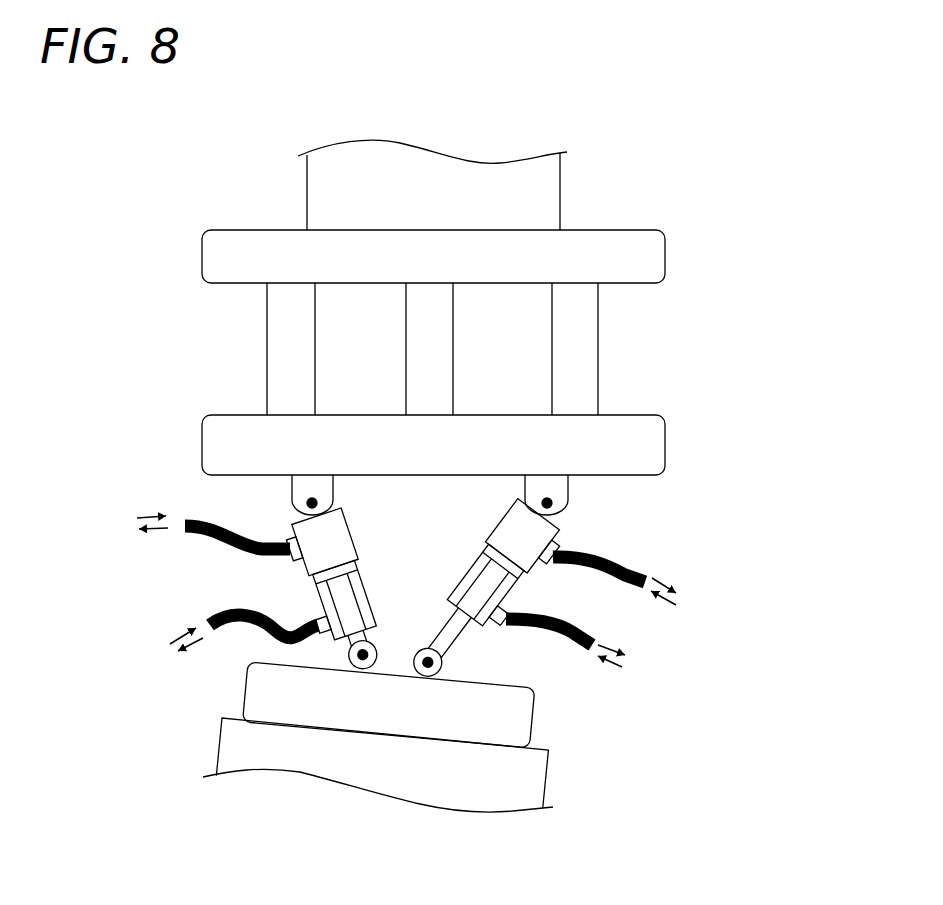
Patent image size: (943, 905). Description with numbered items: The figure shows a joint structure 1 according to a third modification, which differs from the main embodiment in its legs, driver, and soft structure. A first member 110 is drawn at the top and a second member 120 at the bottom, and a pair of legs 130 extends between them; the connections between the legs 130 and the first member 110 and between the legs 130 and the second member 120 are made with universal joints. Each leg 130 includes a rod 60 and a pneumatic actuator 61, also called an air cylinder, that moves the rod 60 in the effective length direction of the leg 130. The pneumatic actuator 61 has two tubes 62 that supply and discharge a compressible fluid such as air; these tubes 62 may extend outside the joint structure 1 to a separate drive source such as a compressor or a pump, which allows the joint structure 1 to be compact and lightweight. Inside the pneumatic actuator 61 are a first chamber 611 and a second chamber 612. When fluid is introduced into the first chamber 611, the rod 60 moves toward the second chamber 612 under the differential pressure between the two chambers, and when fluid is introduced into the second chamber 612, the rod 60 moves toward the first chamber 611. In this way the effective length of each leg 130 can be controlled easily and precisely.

The joint structure 1 is at (146, 312).
The first member 110 is at (650, 439).
The second member 120 is at (245, 692).
The leg 130 is at (300, 575).
The rod 60 is at (443, 628).
The pneumatic actuator 61 is at (488, 542).
The first chamber 611 is at (522, 562).
The second chamber 612 is at (488, 615).
The tube 62 is at (617, 553).